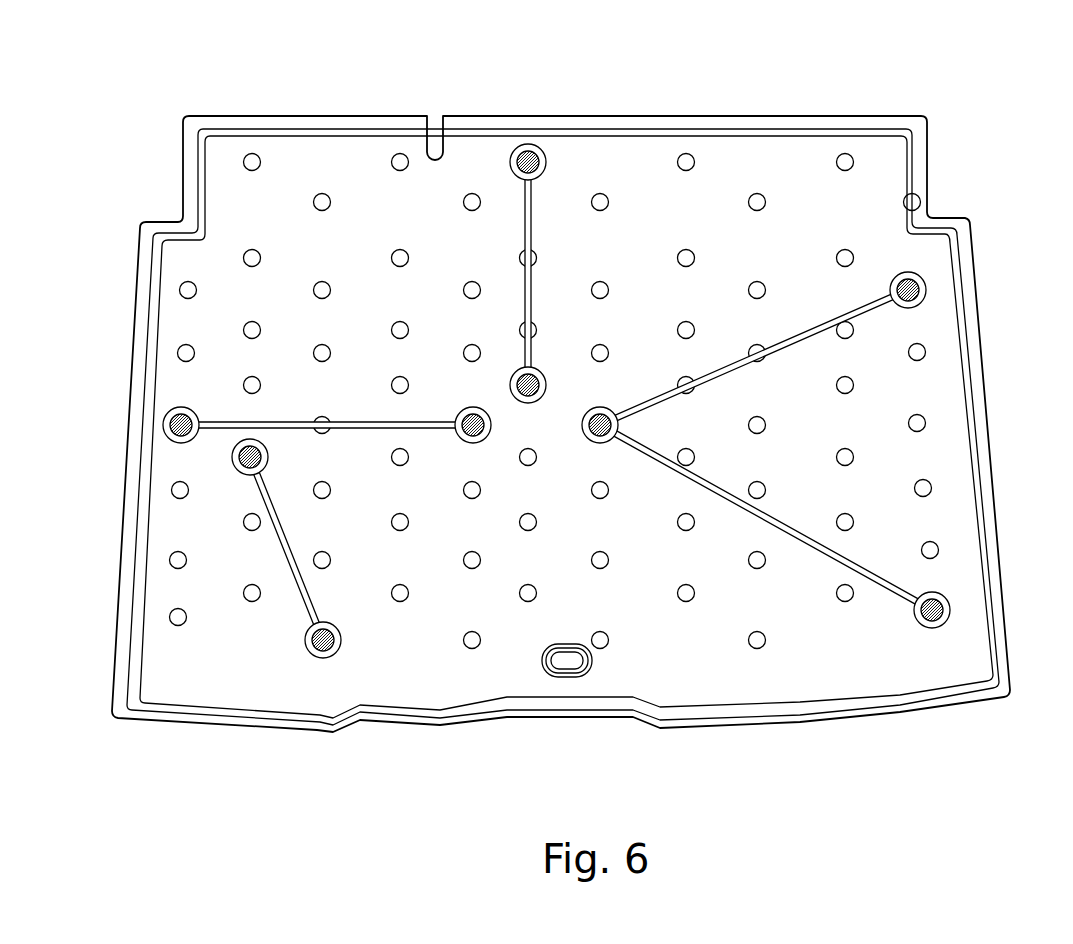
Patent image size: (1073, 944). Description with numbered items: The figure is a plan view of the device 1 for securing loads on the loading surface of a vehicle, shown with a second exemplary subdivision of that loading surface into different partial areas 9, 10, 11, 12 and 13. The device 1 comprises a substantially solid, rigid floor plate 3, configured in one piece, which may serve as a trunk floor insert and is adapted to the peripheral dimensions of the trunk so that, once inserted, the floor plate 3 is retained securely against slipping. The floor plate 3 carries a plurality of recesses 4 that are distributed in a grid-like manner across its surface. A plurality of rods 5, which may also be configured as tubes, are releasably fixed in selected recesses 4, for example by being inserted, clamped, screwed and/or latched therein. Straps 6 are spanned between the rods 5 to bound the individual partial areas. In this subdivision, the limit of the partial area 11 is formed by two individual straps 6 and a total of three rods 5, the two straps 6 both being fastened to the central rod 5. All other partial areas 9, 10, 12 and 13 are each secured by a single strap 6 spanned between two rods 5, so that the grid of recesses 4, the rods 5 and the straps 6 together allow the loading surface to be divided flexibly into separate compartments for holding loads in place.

The device 1 is at (543, 405).
The floor plate 3 is at (893, 173).
The recesses 4 is at (760, 648).
The rods 5 is at (530, 150).
The straps 6 is at (523, 205).
The partial area 9 is at (284, 308).
The partial area 10 is at (624, 263).
The partial area 11 is at (795, 438).
The partial area 12 is at (539, 571).
The partial area 13 is at (214, 573).